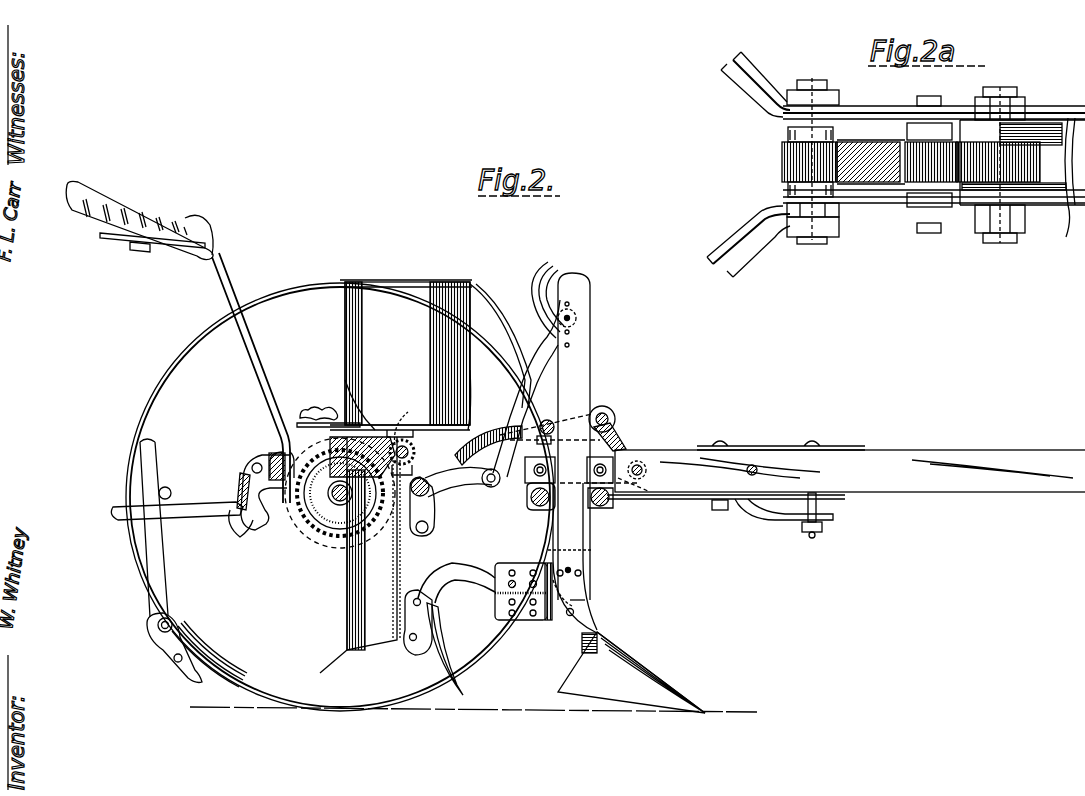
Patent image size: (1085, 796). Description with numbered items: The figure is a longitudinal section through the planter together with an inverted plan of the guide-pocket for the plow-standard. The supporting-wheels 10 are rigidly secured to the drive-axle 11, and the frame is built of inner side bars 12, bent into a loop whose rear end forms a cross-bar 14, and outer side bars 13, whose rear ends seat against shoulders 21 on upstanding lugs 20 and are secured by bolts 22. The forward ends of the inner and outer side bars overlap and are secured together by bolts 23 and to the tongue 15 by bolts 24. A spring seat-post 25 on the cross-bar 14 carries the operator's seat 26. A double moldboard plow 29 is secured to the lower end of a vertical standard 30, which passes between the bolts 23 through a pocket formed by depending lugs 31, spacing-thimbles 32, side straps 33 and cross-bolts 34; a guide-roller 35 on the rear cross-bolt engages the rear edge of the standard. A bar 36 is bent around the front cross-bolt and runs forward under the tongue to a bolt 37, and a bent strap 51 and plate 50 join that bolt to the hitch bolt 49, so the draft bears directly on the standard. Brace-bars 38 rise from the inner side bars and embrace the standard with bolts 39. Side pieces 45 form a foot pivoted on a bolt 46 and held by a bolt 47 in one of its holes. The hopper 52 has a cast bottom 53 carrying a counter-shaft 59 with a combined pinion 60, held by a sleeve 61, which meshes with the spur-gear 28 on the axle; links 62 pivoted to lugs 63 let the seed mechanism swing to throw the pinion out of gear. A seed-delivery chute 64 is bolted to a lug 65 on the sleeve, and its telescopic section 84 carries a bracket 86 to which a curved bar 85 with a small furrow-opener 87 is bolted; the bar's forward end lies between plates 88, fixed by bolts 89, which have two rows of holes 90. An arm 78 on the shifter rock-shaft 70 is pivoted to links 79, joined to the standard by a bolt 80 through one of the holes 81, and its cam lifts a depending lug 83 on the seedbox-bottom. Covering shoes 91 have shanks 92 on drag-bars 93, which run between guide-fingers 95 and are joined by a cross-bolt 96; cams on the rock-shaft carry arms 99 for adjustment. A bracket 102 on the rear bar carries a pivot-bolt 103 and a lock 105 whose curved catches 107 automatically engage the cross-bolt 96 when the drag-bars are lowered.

In FIG. 2, the supporting-wheels 10 is at (176, 360).
In FIG. 2, the drive-axle 11 is at (330, 500).
In FIG. 2, the inner side bars 12 is at (302, 418).
In FIG. 2A, the inner side bars 12 is at (730, 66).
In FIG. 2A, the outer side bars 13 is at (750, 72).
In FIG. 2, the cross-bar 14 is at (274, 450).
In FIG. 2, the draft pole or tongue 15 is at (932, 462).
In FIG. 2A, the draft pole or tongue 15 is at (1040, 130).
In FIG. 2, the upstanding lugs 20 is at (549, 420).
In FIG. 2, the shoulders or seats 21 is at (614, 420).
In FIG. 2, the bolts 22 is at (620, 448).
In FIG. 2, the bolts 23 is at (570, 510).
In FIG. 2A, the bolts 23 is at (814, 240).
In FIG. 2, the bolts 24 is at (752, 464).
In FIG. 2A, the bolts 24 is at (1010, 90).
In FIG. 2, the seat-post 25 is at (258, 362).
In FIG. 2, the operator's seat 26 is at (160, 214).
In FIG. 2, the spur-gear 28 is at (575, 583).
In FIG. 2, the plow 29 is at (660, 688).
In FIG. 2, the standard 30 is at (588, 550).
In FIG. 2A, the standard 30 is at (860, 182).
In FIG. 2, the lugs 31 is at (575, 461).
In FIG. 2A, the lugs 31 is at (788, 132).
In FIG. 2, the spacing-thimbles 32 is at (548, 462).
In FIG. 2, the side straps 33 is at (598, 510).
In FIG. 2A, the side straps 33 is at (890, 182).
In FIG. 2, the cross-bolts 34 is at (530, 496).
In FIG. 2A, the cross-bolts 34 is at (803, 208).
In FIG. 2, the guide-roller 35 is at (535, 508).
In FIG. 2A, the guide-roller 35 is at (782, 156).
In FIG. 2, the bar 36 is at (694, 500).
In FIG. 2A, the bar 36 is at (1011, 156).
In FIG. 2, the bolt 37 is at (719, 512).
In FIG. 2, the brace-bars 38 is at (525, 378).
In FIG. 2, the bolts 39 is at (604, 405).
In FIG. 2, the side pieces of foot 45 is at (575, 603).
In FIG. 2, the bolt 46 is at (576, 613).
In FIG. 2, the bolt 47 is at (582, 572).
In FIG. 2, the bolt 49 is at (818, 508).
In FIG. 2, the plate 50 is at (790, 448).
In FIG. 2, the bent strap 51 is at (794, 522).
In FIG. 2, the seed box or hopper 52 is at (401, 358).
In FIG. 2, the seedbox-bottom 53 is at (360, 378).
In FIG. 2, the counter-shaft 59 is at (402, 440).
In FIG. 2, the combined beveled and spur pinion 60 is at (410, 435).
In FIG. 2, the sleeve 61 is at (392, 440).
In FIG. 2, the links 62 is at (472, 380).
In FIG. 2A, the upstanding lugs 63 is at (828, 92).
In FIG. 2, the seed-delivery chute 64 is at (365, 596).
In FIG. 2, the lug 65 is at (390, 470).
In FIG. 2, the shifter rock-shaft 70 is at (440, 505).
In FIG. 2, the arm 78 is at (484, 488).
In FIG. 2, the links 79 is at (535, 358).
In FIG. 2, the bolt 80 is at (570, 317).
In FIG. 2, the holes 81 is at (548, 293).
In FIG. 2, the depending lug 83 is at (476, 430).
In FIG. 2, the telescopic chute-section 84 is at (329, 667).
In FIG. 2, the curved bar 85 is at (458, 583).
In FIG. 2, the bracket 86 is at (408, 652).
In FIG. 2, the small furrow-opener 87 is at (466, 690).
In FIG. 2, the plates 88 is at (528, 618).
In FIG. 2, the bolts 89 is at (532, 570).
In FIG. 2, the holes 90 is at (508, 586).
In FIG. 2, the shoes or covering devices 91 is at (220, 668).
In FIG. 2, the shanks 92 is at (162, 580).
In FIG. 2, the drag-bars 93 is at (582, 338).
In FIG. 2, the guide-fingers 95 is at (573, 630).
In FIG. 2, the cross-bolt 96 is at (243, 530).
In FIG. 2, the arms 99 is at (430, 514).
In FIG. 2, the bracket 102 is at (266, 458).
In FIG. 2, the pivot-bolt 103 is at (252, 468).
In FIG. 2, the lock 105 is at (240, 485).
In FIG. 2, the curved catches or stops 107 is at (255, 518).